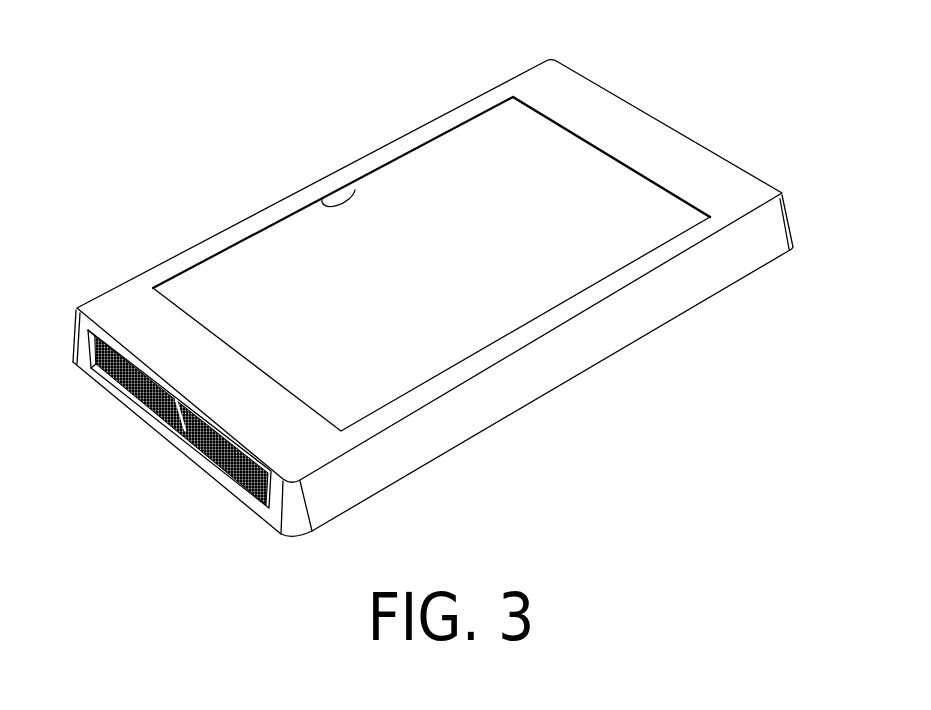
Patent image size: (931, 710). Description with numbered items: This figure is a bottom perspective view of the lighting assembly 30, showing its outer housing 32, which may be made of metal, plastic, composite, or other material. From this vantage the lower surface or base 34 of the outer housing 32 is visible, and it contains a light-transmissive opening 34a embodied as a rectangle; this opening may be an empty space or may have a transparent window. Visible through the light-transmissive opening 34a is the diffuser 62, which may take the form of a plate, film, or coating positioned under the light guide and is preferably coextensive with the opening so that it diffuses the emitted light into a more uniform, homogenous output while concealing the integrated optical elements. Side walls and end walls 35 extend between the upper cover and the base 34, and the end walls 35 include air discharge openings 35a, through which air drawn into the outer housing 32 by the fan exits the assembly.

The lighting assembly 30 is at (133, 202).
The outer housing 32 is at (645, 108).
The lower surface or base 34 is at (579, 94).
The light-transmissive opening 34a is at (353, 188).
The diffuser 62 is at (515, 233).
The end walls 35 is at (275, 507).
The air discharge openings 35a is at (193, 447).